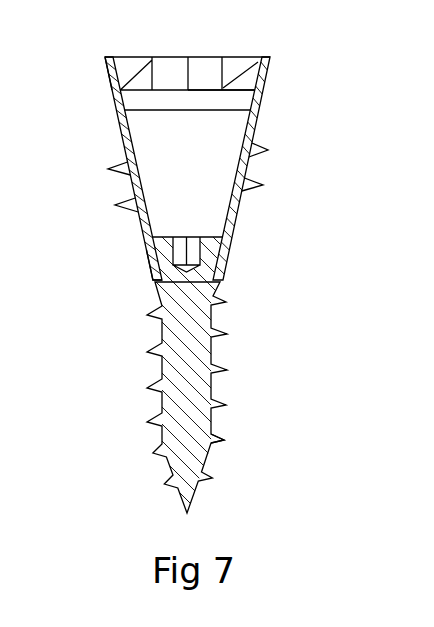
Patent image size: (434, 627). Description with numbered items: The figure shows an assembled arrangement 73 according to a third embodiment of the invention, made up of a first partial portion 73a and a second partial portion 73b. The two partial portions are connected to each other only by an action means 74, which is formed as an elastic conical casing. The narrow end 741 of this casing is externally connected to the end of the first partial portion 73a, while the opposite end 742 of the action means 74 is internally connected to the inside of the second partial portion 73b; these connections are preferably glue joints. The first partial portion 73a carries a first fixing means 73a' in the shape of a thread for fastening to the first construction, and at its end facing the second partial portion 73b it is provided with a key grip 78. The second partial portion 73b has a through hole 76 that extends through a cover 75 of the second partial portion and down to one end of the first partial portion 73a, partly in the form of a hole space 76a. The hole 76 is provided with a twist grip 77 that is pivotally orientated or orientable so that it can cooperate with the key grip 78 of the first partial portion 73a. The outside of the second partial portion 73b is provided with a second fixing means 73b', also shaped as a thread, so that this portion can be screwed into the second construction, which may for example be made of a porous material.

The assembled arrangement 73 is at (203, 260).
The first partial portion 73a is at (224, 375).
The first fixing means 73a' is at (256, 421).
The second partial portion 73b is at (241, 167).
The second fixing means 73b' is at (230, 162).
The action means 74 is at (164, 172).
The narrow end of action means 741 is at (147, 267).
The opposite end of action means 742 is at (118, 132).
The cover 75 is at (171, 49).
The through hole 76 is at (207, 72).
The hole space 76a is at (177, 172).
The twist grip 77 is at (185, 72).
The key grip 78 is at (196, 250).